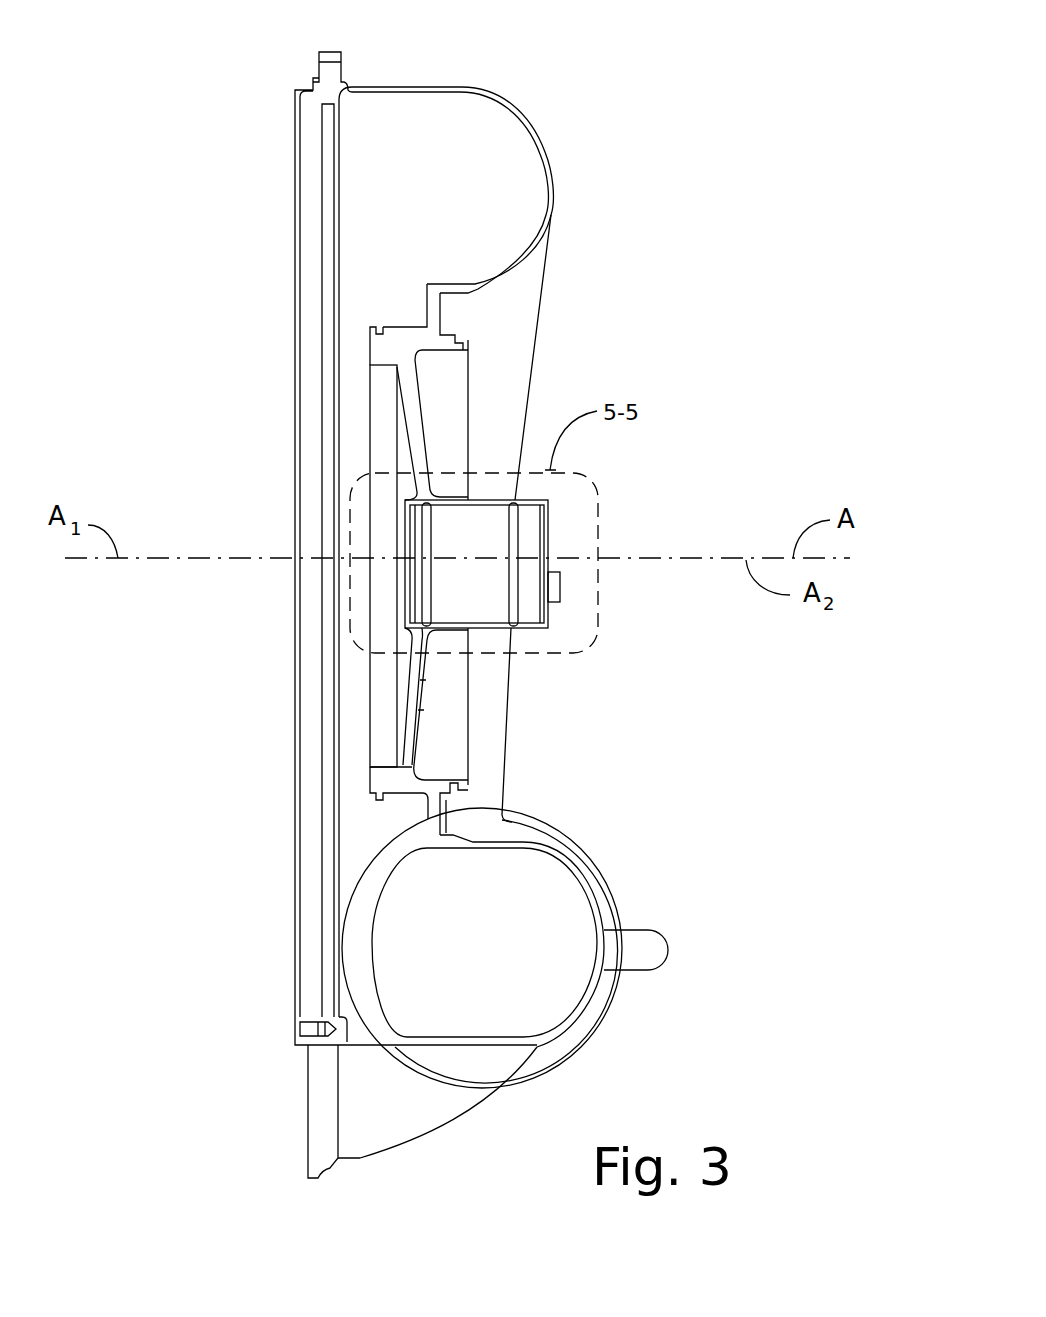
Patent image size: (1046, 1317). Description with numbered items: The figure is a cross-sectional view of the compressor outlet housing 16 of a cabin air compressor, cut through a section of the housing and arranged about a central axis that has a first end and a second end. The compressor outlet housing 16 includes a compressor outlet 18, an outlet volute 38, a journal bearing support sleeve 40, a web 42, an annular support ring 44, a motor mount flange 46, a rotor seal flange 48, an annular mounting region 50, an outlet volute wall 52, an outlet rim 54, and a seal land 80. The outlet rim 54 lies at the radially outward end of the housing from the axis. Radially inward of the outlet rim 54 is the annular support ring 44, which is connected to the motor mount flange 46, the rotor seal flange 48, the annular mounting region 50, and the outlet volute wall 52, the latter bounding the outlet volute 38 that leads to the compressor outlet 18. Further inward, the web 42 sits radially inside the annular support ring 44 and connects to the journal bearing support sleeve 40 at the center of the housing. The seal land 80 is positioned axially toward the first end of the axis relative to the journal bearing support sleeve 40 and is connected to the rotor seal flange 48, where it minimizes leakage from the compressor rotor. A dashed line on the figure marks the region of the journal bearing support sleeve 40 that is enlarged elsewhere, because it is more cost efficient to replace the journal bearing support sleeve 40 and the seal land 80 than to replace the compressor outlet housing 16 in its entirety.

The compressor outlet housing 16 is at (203, 913).
The compressor outlet 18 is at (485, 954).
The outlet volute 38 is at (438, 174).
The journal bearing support sleeve 40 is at (487, 503).
The web 42 is at (420, 460).
The annular support ring 44 is at (400, 335).
The motor mount flange 46 is at (440, 318).
The rotor seal flange 48 is at (388, 365).
The annular mounting region 50 is at (420, 325).
The outlet volute wall 52 is at (551, 178).
The outlet rim 54 is at (343, 67).
The seal land 80 is at (385, 397).